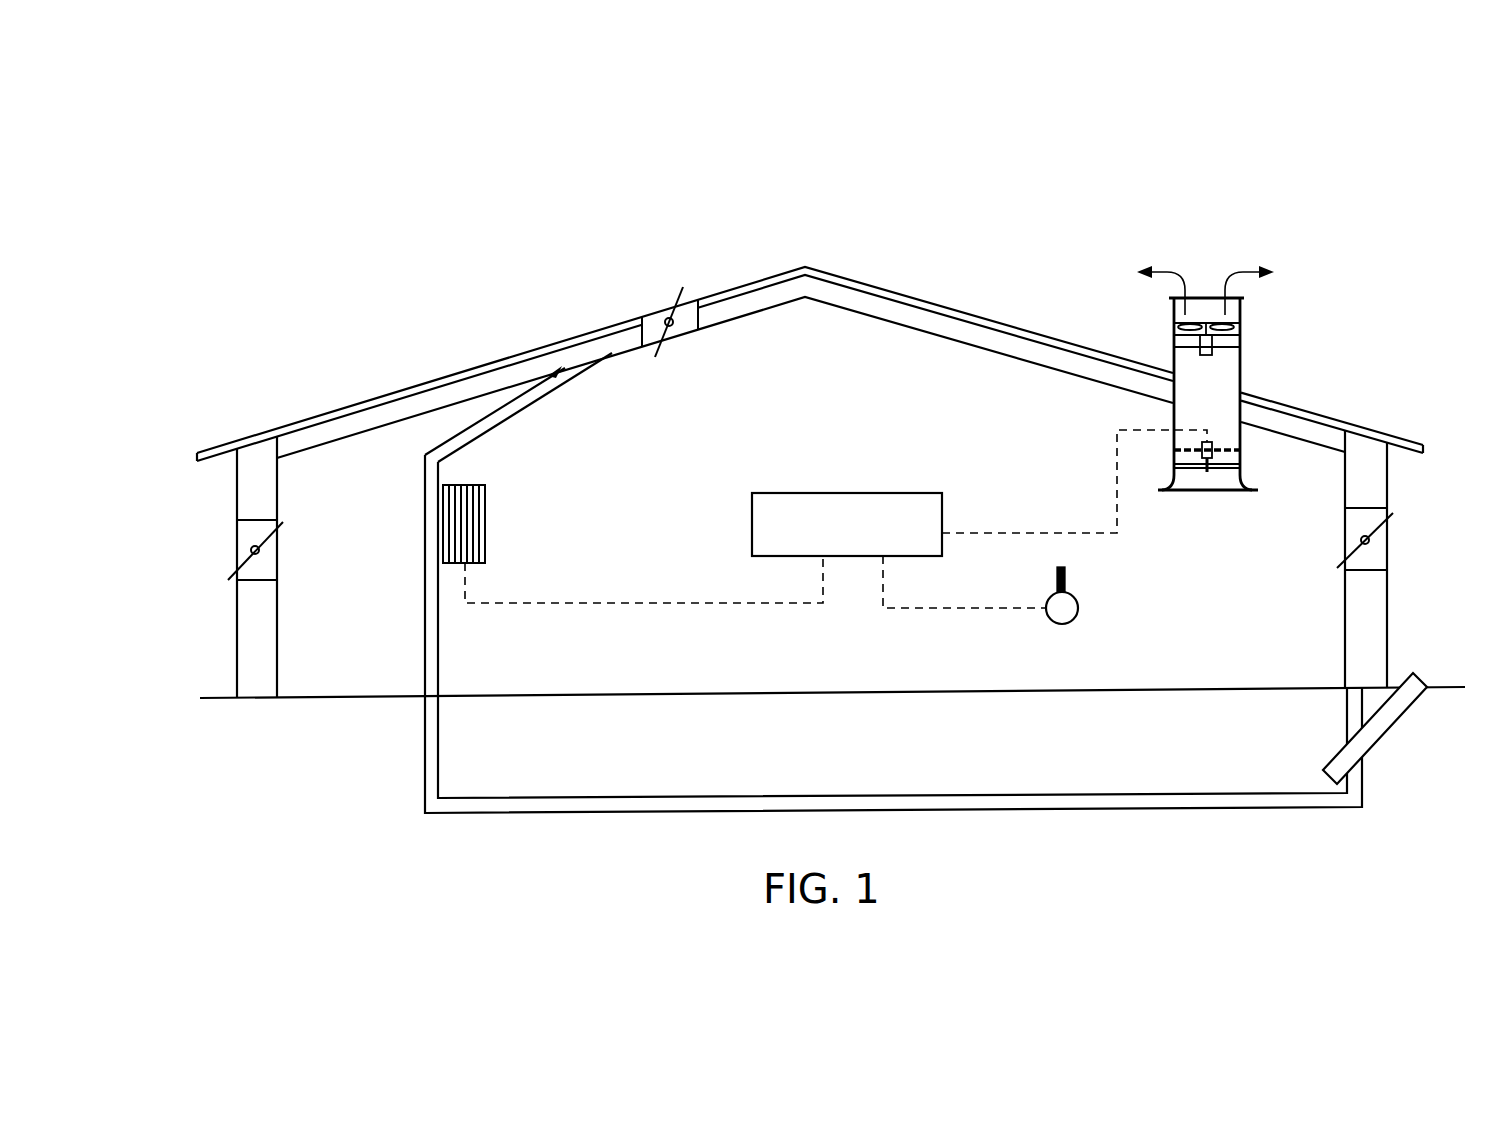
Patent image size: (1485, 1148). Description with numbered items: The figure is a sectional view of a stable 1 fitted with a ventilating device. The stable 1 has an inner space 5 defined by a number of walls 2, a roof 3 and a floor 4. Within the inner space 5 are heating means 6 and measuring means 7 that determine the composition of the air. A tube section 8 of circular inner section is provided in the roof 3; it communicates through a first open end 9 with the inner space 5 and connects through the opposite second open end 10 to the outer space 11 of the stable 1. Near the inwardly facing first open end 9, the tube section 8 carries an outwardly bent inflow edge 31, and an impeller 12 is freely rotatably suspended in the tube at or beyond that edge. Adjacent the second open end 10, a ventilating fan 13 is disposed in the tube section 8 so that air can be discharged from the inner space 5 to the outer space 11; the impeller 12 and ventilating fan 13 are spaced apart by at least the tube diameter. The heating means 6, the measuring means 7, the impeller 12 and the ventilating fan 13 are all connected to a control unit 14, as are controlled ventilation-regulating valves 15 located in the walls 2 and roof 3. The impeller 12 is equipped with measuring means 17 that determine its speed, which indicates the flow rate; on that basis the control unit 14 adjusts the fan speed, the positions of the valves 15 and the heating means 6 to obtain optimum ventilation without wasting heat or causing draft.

The stable 1 is at (462, 282).
The walls 2 is at (250, 630).
The roof 3 is at (988, 338).
The floor 4 is at (830, 688).
The inner space 5 is at (865, 450).
The heating means 6 is at (488, 525).
The measuring means 7 is at (1063, 612).
The tube section 8 is at (1242, 360).
The first open end 9 is at (1218, 542).
The second open end 10 is at (1207, 250).
The outer space 11 is at (1076, 200).
The impeller 12 is at (1225, 466).
The ventilating fan 13 is at (1207, 308).
The control unit 14 is at (866, 535).
The ventilation-regulating valves 15 is at (680, 305).
The measuring means 17 is at (1212, 450).
The inflow edge 31 is at (1158, 512).